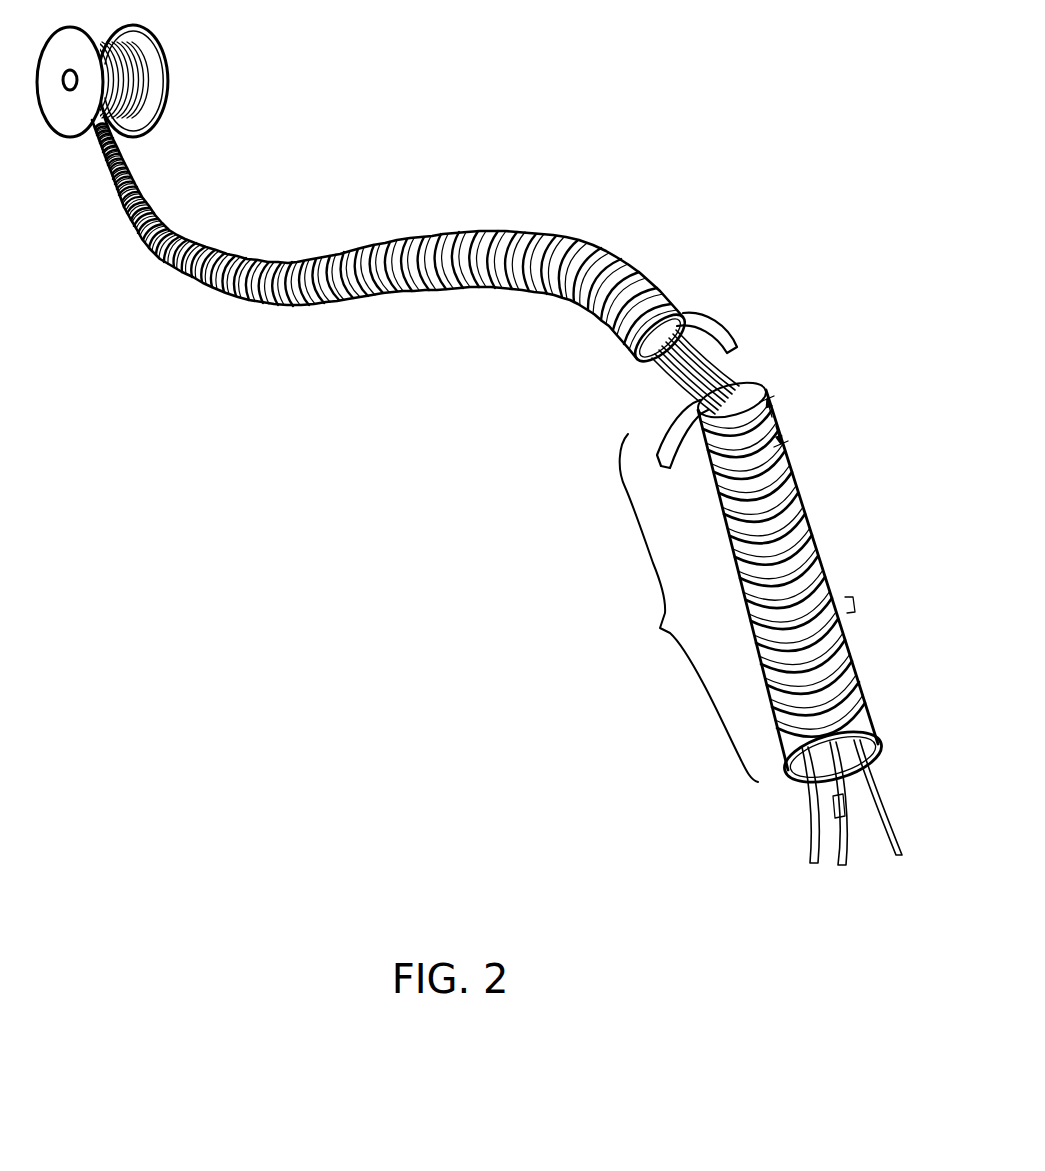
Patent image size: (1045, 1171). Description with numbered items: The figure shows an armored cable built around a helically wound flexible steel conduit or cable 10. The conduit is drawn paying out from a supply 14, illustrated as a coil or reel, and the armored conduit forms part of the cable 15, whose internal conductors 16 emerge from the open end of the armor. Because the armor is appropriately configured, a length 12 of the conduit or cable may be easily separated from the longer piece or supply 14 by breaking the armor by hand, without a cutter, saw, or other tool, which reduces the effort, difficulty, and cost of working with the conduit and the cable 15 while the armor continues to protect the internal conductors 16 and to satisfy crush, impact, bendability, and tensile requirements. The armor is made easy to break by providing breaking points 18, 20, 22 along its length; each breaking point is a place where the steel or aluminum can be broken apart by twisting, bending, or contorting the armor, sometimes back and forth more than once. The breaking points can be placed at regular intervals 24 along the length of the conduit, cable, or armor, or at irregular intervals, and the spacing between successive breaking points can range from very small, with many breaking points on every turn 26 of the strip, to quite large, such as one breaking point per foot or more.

The helically wound flexible steel conduit or cable 10 is at (548, 207).
The length of conduit or cable 12 is at (685, 556).
The supply 14 is at (168, 86).
The cable 15 is at (855, 552).
The internal conductors 16 is at (812, 832).
The breaking point 18 is at (800, 513).
The breaking point 20 is at (850, 652).
The breaking point 22 is at (619, 264).
The regular intervals 24 is at (778, 427).
The turn of the strip 26 is at (858, 602).